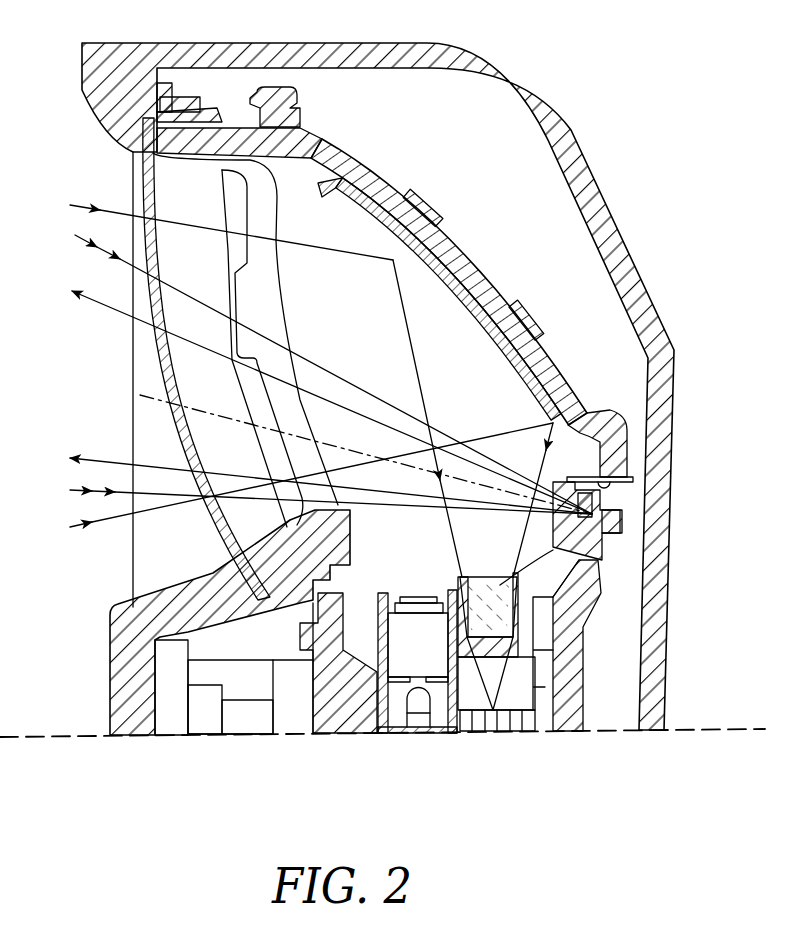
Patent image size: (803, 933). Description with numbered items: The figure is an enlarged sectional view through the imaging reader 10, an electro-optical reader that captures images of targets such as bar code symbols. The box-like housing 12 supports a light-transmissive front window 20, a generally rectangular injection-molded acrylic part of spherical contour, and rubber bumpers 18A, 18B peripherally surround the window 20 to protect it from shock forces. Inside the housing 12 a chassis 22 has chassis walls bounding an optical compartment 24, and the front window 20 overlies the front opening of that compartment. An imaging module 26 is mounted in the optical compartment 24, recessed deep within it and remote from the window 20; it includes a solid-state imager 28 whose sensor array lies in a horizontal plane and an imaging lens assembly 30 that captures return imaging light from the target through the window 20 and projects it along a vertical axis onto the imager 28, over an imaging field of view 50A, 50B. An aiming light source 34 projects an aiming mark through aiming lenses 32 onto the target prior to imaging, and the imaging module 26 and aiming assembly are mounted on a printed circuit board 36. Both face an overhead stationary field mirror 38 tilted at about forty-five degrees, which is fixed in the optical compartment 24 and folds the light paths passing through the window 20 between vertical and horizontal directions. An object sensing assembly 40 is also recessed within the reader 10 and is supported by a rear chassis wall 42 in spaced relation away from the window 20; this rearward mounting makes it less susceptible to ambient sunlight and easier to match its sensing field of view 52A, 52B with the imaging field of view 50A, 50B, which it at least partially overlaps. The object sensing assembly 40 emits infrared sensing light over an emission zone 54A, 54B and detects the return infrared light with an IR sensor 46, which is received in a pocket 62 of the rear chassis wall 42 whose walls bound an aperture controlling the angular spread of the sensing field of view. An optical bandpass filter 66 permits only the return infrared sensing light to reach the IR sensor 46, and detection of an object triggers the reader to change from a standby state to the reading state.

The imaging reader 10 is at (657, 148).
The housing 12 is at (618, 228).
The rubber bumper 18A is at (190, 100).
The rubber bumper 18B is at (247, 105).
The front window 20 is at (178, 373).
The chassis 22 is at (397, 203).
The optical compartment 24 is at (290, 153).
The imaging module 26 is at (432, 573).
The solid-state imager 28 is at (497, 720).
The imaging lens assembly 30 is at (490, 590).
The aiming lenses 32 is at (423, 597).
The aiming light source 34 is at (423, 720).
The printed circuit board 36 is at (383, 734).
The field mirror 38 is at (470, 312).
The object sensing assembly 40 is at (620, 535).
The rear chassis wall 42 is at (600, 580).
The IR sensor 46 is at (624, 536).
The imaging field of view 50A is at (78, 205).
The imaging field of view 50B is at (83, 527).
The sensing field of view 52A is at (83, 238).
The sensing field of view 52B is at (85, 490).
The emission zone 54A is at (107, 307).
The emission zone 54B is at (110, 457).
The pocket 62 is at (600, 425).
The optical bandpass filter 66 is at (590, 498).